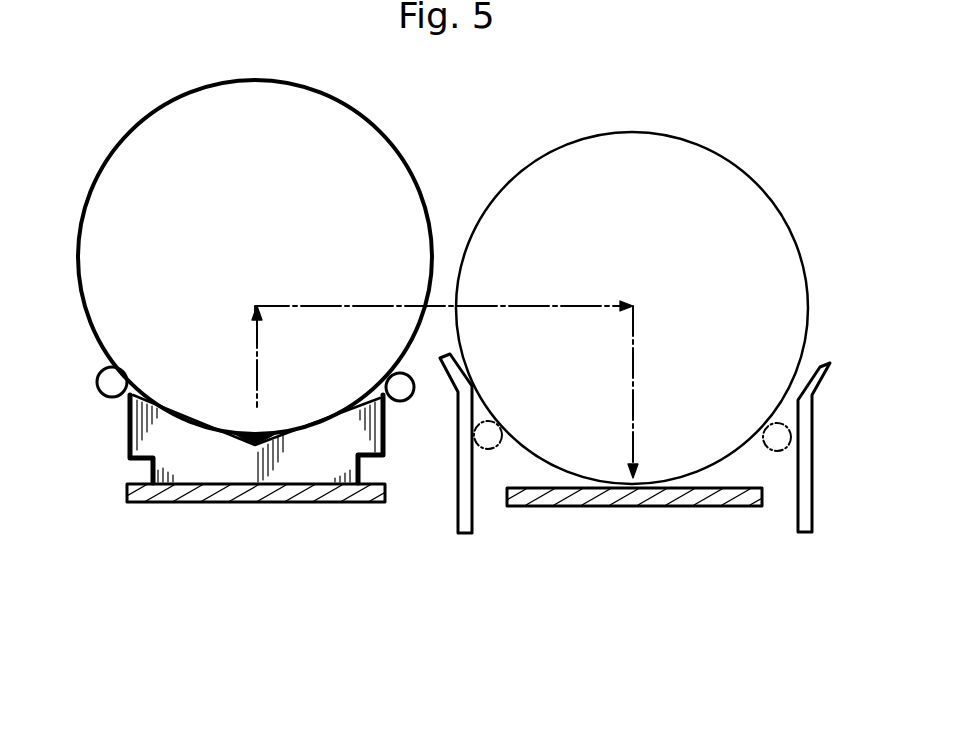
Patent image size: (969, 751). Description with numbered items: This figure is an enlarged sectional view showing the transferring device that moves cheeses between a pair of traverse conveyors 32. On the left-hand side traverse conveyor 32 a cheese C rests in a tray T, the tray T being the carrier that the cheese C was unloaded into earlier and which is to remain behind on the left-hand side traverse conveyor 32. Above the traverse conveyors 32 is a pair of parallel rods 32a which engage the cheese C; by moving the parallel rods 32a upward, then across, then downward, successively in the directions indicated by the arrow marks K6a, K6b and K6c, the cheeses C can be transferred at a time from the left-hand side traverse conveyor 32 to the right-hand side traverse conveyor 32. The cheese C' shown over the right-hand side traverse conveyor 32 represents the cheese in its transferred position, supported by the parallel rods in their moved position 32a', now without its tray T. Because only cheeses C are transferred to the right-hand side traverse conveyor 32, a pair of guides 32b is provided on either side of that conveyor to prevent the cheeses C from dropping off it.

The cheese C is at (233, 257).
The coin of larger diameter C' is at (643, 308).
The tray T is at (386, 460).
The traverse conveyor 32 is at (265, 503).
The parallel rods 32a is at (249, 407).
The guide roller in alternate position 32a' is at (635, 493).
The guides 32b is at (453, 498).
The arrow mark K6a is at (281, 356).
The arrow mark K6b is at (444, 294).
The arrow mark K6c is at (657, 392).